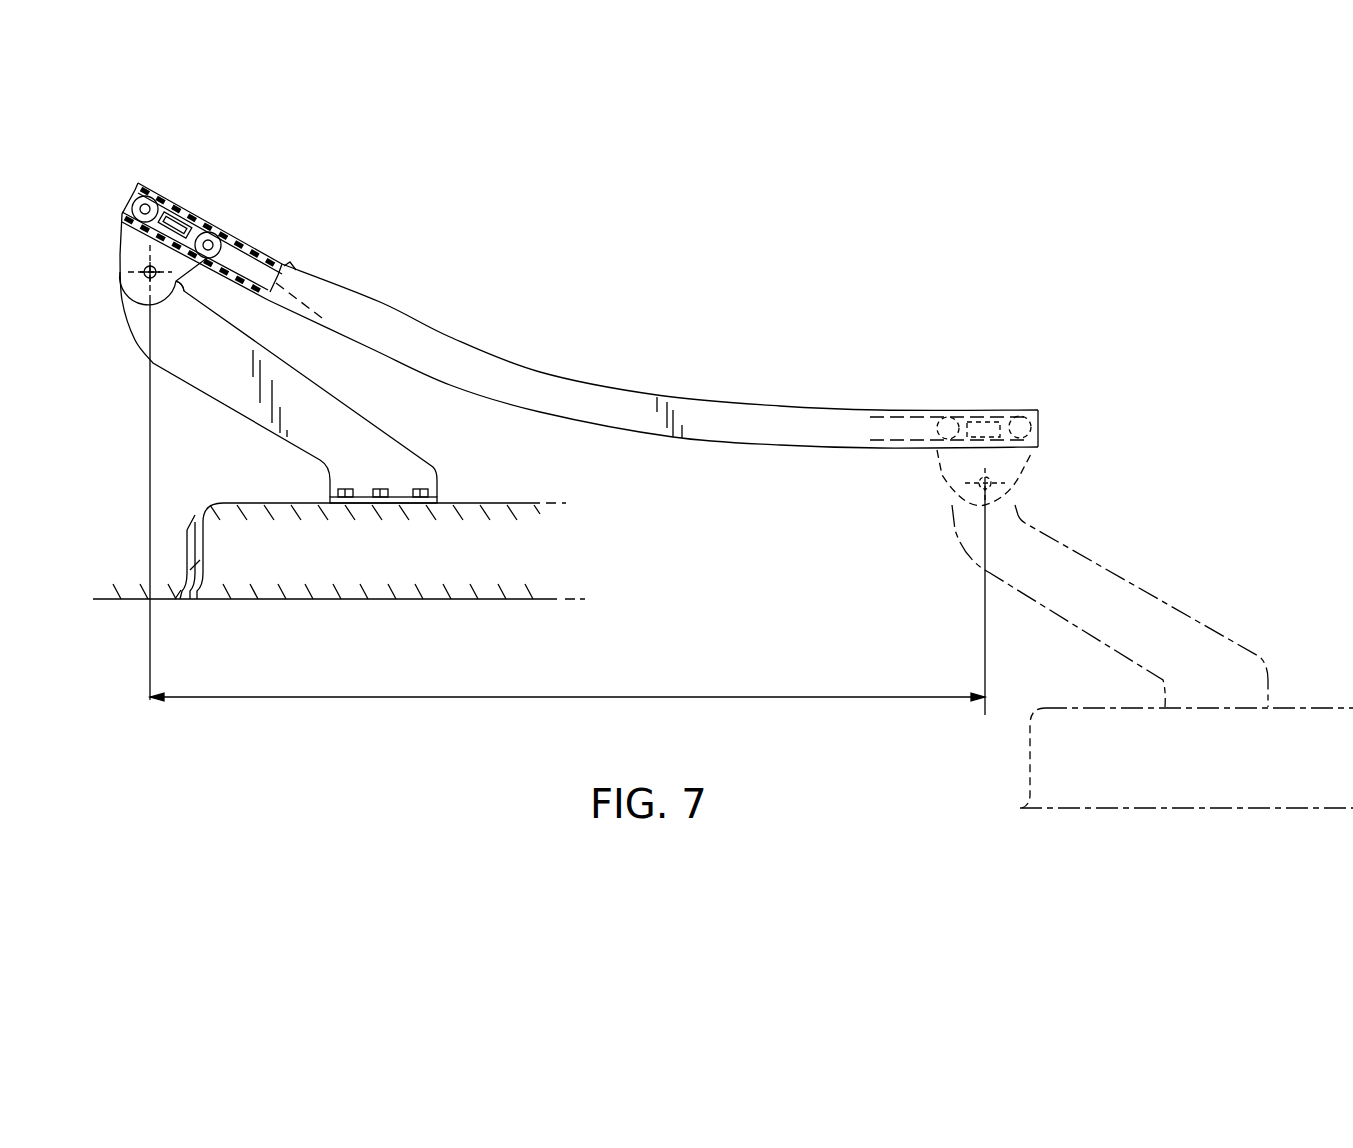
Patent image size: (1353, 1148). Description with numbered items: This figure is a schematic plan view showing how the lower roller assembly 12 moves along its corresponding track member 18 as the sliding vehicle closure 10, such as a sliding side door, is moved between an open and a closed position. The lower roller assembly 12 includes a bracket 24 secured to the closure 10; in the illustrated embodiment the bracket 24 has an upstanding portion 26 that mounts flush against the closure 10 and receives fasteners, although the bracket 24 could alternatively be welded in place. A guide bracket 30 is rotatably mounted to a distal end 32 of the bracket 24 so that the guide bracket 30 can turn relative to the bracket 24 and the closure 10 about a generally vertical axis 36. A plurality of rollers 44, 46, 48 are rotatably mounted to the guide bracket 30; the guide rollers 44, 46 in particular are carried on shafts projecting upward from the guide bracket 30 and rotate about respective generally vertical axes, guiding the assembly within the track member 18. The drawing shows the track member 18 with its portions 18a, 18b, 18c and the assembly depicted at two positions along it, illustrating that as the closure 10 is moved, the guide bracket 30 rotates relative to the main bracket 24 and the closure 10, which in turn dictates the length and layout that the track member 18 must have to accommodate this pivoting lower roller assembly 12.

The sliding vehicle closure 10 is at (405, 602).
The lower roller assembly 12 is at (609, 351).
The track member 18 is at (580, 279).
The rail arm portion 18a is at (328, 308).
The rail channel portion 18b is at (580, 275).
The rail sleeve portion 18c is at (283, 268).
The bracket 24 is at (270, 435).
The upstanding portion 26 is at (403, 497).
The guide bracket 30 is at (200, 278).
The distal end 32 is at (140, 273).
The vertical axis 36 is at (140, 282).
The guide roller 44 is at (210, 243).
The guide roller 46 is at (147, 205).
The roller 48 is at (175, 225).